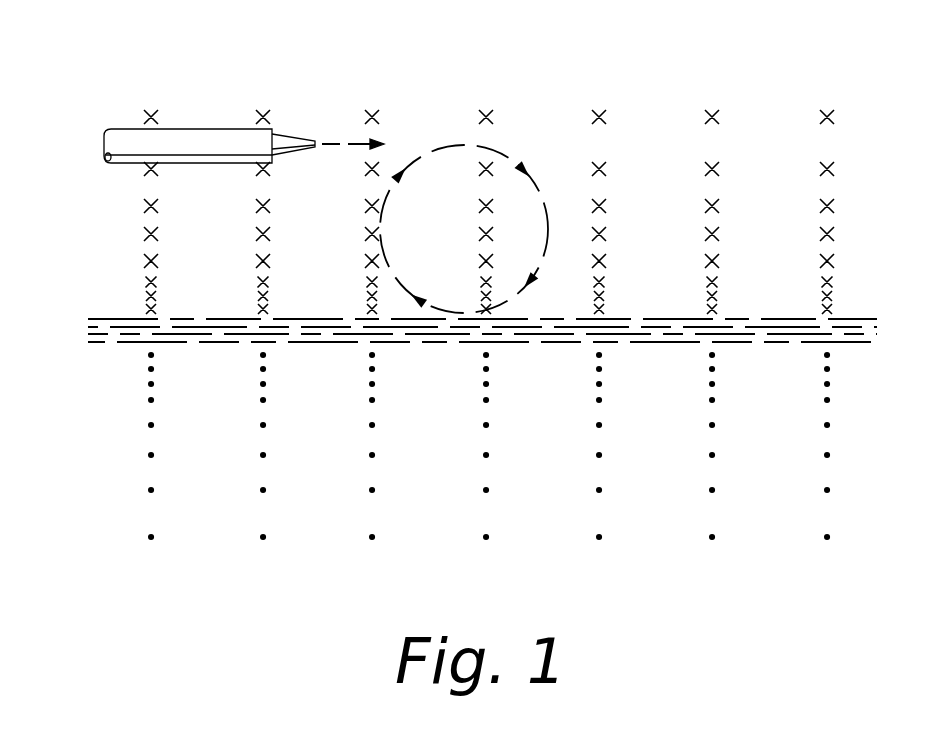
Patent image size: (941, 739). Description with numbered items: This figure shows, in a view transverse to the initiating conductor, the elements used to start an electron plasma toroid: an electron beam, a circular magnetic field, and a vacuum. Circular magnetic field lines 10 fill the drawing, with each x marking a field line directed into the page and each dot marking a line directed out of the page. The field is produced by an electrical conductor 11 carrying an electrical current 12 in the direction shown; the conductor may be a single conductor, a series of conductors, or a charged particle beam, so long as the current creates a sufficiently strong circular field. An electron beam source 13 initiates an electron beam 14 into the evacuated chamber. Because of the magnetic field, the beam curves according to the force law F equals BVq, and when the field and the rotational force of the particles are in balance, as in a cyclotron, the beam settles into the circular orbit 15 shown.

The circular magnetic field lines 10 is at (371, 117).
The electrical conductor 11 is at (862, 343).
The electrical current 12 is at (75, 335).
The electron beam source 13 is at (200, 128).
The electron beam 14 is at (430, 146).
The circular orbit 15 is at (541, 190).